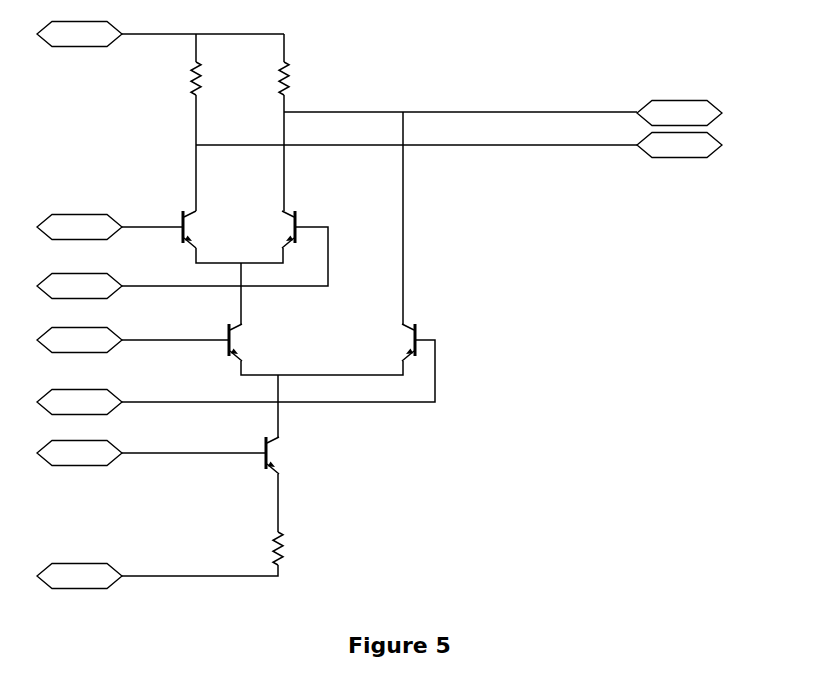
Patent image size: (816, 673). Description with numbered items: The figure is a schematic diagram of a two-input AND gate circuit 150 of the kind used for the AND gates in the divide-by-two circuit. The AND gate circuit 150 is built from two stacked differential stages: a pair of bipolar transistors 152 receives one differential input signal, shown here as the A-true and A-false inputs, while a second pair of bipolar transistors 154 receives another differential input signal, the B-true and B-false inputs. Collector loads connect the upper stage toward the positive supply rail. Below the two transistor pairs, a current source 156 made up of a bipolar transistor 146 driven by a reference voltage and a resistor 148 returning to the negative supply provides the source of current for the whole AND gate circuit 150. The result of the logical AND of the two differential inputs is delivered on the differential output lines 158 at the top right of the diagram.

The AND gate circuit 150 is at (733, 205).
The pair of bipolar transistors 152 is at (306, 212).
The pair of bipolar transistors 154 is at (358, 338).
The current source 156 is at (336, 503).
The bipolar transistor 146 is at (262, 465).
The resistor 148 is at (288, 554).
The differential output lines 158 is at (717, 132).